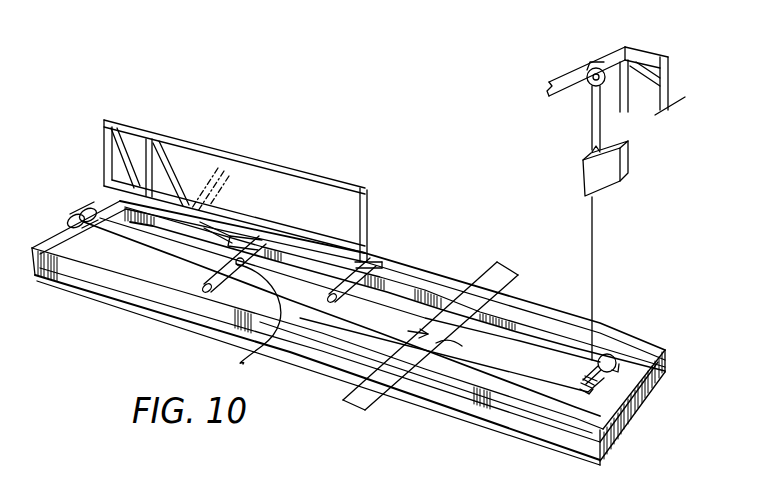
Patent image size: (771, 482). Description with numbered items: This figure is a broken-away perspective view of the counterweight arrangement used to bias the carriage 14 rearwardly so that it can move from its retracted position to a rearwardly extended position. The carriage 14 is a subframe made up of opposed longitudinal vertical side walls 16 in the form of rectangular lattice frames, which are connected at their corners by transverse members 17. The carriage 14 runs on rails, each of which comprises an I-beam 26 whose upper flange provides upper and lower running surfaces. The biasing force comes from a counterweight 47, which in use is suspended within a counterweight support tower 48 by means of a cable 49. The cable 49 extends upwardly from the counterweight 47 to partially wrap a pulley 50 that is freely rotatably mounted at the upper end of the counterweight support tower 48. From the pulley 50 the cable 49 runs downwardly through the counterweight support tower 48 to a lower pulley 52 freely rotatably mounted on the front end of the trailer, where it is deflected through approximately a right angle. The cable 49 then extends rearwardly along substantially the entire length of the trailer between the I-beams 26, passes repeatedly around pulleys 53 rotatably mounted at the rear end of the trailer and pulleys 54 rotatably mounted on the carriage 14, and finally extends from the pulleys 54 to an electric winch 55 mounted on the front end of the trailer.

The carriage 14 is at (235, 170).
The longitudinal vertical side walls 16 is at (262, 164).
The transverse members 17 is at (378, 257).
The I-beam 26 is at (520, 313).
The counterweight 47 is at (615, 168).
The counterweight support tower 48 is at (676, 82).
The cable 49 is at (593, 301).
The pulley 50 is at (603, 67).
The lower pulley 52 is at (552, 400).
The pulleys 53 is at (74, 215).
The pulleys 54 is at (243, 364).
The electric winch 55 is at (627, 343).